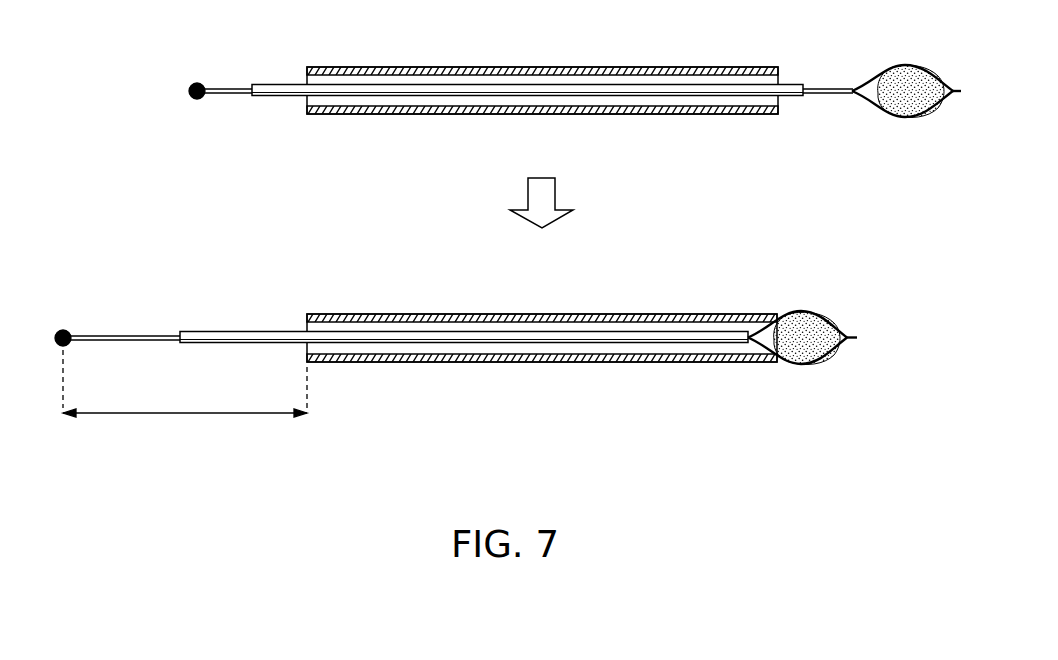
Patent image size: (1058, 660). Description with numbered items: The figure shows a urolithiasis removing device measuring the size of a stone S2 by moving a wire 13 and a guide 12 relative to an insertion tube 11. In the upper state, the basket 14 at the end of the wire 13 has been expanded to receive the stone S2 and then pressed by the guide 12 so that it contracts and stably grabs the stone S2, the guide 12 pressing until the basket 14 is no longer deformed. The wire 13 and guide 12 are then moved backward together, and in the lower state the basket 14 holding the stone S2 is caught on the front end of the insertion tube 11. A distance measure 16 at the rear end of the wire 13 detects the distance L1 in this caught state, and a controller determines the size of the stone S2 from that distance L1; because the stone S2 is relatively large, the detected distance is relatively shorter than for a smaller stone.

The insertion tube 11 is at (490, 67).
The guide 12 is at (618, 93).
The wire 13 is at (225, 95).
The basket 14 is at (873, 75).
The distance measure 16 is at (195, 82).
The stone S2 is at (920, 72).
The distance L1 is at (185, 398).